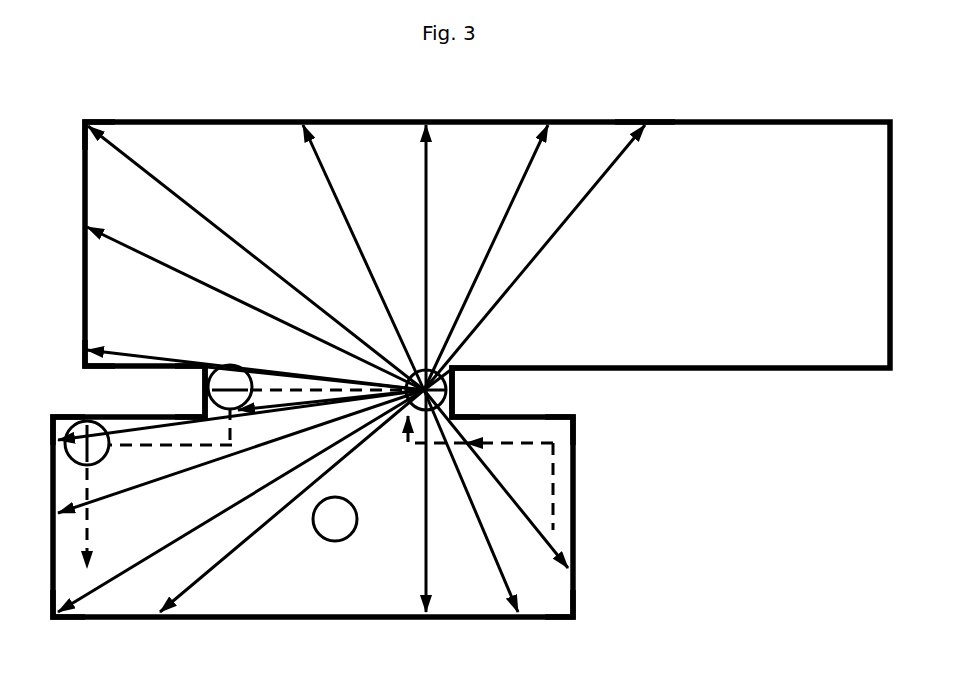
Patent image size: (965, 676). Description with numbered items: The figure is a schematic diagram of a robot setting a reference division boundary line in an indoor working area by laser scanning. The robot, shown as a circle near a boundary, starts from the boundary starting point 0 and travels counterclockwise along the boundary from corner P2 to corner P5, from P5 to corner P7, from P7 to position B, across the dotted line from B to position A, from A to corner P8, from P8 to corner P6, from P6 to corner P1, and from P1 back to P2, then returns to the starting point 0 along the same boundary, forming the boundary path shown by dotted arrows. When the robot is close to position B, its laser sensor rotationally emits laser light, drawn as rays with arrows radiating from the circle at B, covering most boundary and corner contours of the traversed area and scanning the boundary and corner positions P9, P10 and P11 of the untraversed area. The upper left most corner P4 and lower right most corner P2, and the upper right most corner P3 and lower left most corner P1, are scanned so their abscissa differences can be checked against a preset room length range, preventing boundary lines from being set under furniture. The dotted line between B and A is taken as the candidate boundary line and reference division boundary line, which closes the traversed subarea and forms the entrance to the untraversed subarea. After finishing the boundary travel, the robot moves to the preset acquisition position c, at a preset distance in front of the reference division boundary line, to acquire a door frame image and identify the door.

The lower left most corner P1 is at (57, 616).
The lower right most corner P2 is at (572, 616).
The upper right most corner P3 is at (645, 111).
The upper left most corner P4 is at (87, 125).
The boundary corner position P5 is at (568, 419).
The boundary corner position P6 is at (56, 420).
The boundary corner position P7 is at (466, 406).
The boundary corner position P8 is at (190, 406).
The boundary corner position P9 is at (87, 363).
The boundary corner position P10 is at (197, 370).
The boundary corner position P11 is at (474, 370).
The position A is at (219, 387).
The position B is at (436, 390).
The preset acquisition position c is at (335, 519).
The boundary starting point 0 is at (306, 479).